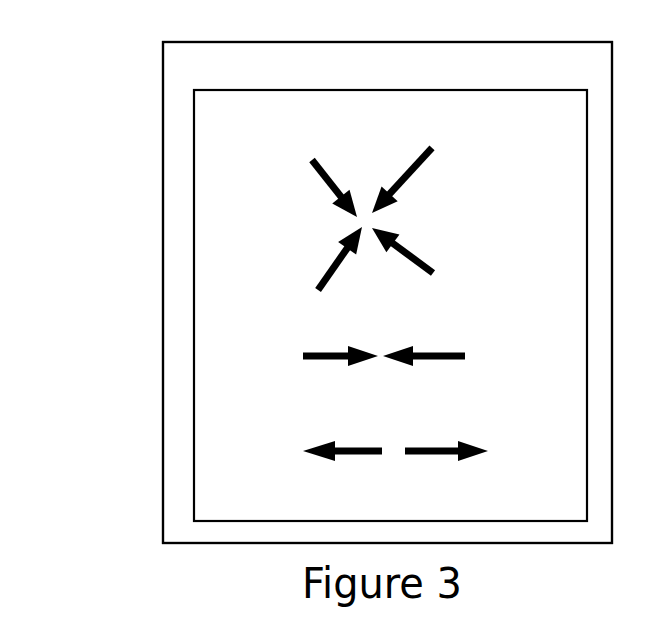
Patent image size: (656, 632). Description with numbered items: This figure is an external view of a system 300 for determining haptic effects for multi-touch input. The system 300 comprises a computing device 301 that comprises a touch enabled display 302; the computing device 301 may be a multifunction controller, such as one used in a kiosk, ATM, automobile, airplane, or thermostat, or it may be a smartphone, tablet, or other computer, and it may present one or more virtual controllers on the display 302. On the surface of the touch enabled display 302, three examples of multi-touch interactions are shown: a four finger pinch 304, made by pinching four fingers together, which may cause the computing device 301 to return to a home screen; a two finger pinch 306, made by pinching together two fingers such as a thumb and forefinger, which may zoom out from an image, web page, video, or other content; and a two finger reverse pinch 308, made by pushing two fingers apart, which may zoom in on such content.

The system 300 is at (128, 110).
The computing device 301 is at (518, 73).
The touch enabled display 302 is at (547, 120).
The four finger pinch 304 is at (340, 210).
The two finger pinch 306 is at (302, 355).
The two finger reverse pinch 308 is at (305, 450).